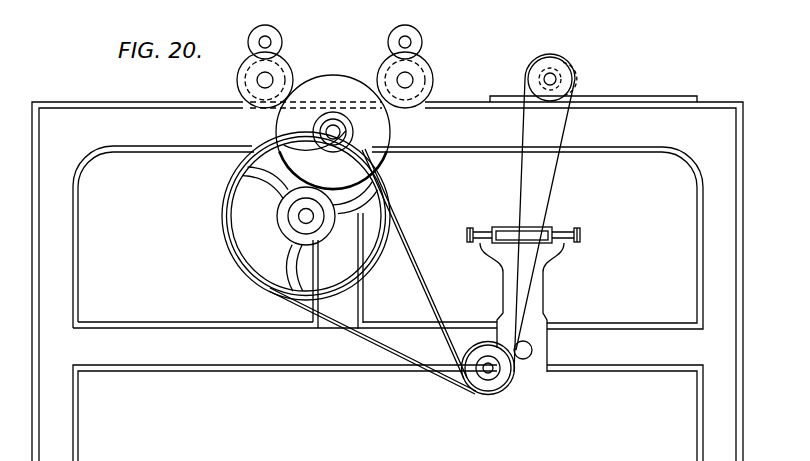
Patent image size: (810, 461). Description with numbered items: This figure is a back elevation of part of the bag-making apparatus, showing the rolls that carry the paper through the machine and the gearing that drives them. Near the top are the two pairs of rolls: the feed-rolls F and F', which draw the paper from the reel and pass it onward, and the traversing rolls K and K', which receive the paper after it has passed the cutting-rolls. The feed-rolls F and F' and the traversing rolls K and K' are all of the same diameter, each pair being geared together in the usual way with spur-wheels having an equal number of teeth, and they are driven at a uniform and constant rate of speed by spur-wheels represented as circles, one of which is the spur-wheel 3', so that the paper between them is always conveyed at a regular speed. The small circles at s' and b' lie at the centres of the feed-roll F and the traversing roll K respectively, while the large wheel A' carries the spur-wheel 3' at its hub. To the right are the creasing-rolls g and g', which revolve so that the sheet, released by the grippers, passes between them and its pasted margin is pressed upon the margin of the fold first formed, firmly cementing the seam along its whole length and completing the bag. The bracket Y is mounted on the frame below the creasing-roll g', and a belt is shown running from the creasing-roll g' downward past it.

The feed-roll F is at (247, 42).
The feed-roll F' is at (250, 80).
The roller shaft s' is at (283, 48).
The traversing roll K is at (391, 42).
The traversing roll K' is at (394, 80).
The roller shaft b' is at (421, 50).
The creasing-roll g' is at (554, 206).
The creasing-roll g is at (588, 75).
The adjustable bracket Y is at (549, 227).
The spur-wheel 3' is at (294, 216).
The driving wheel A' is at (306, 217).